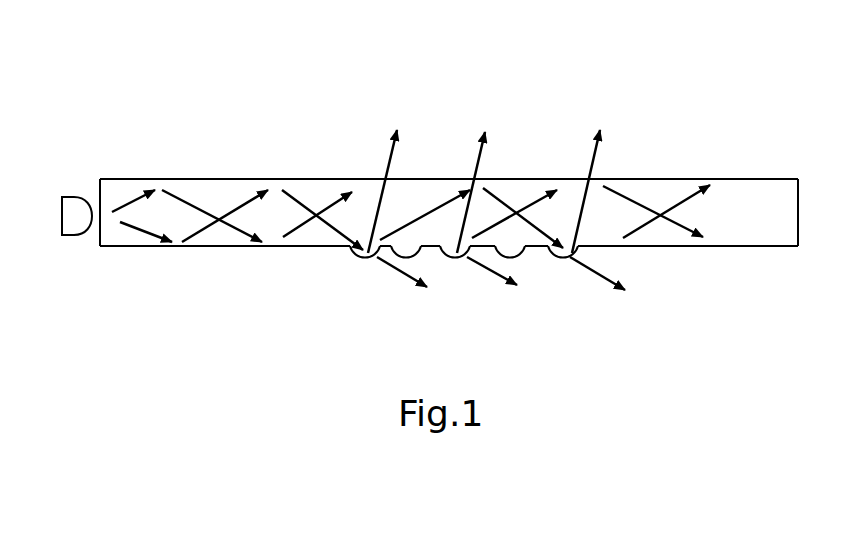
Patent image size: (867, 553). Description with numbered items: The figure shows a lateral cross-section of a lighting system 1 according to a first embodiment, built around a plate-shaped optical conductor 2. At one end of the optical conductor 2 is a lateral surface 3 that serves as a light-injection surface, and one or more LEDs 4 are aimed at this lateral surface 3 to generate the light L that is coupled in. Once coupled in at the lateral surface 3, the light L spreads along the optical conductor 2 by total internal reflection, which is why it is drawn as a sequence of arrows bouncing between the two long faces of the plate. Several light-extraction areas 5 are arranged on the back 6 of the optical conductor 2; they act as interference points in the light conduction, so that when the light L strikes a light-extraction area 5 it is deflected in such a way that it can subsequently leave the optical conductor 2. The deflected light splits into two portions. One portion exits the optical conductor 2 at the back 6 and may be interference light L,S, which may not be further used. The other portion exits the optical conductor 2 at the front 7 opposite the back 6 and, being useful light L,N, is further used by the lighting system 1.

The lighting system 1 is at (123, 113).
The optical conductor 2 is at (233, 180).
The lateral surface 3 is at (100, 240).
The LED 4 is at (62, 212).
The light-extraction area 5 is at (367, 258).
The back 6 is at (763, 247).
The front 7 is at (763, 175).
The light L is at (137, 227).
The useful light L,N is at (587, 152).
The interference light L,S is at (418, 259).